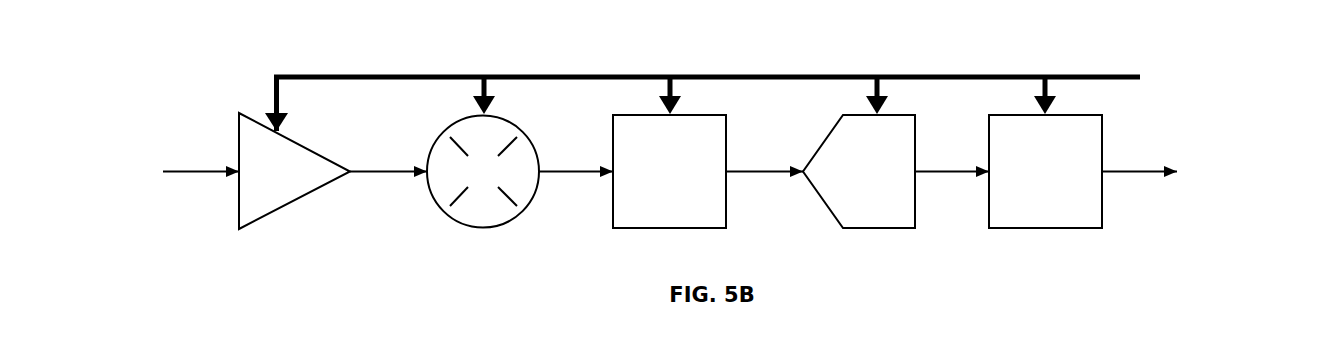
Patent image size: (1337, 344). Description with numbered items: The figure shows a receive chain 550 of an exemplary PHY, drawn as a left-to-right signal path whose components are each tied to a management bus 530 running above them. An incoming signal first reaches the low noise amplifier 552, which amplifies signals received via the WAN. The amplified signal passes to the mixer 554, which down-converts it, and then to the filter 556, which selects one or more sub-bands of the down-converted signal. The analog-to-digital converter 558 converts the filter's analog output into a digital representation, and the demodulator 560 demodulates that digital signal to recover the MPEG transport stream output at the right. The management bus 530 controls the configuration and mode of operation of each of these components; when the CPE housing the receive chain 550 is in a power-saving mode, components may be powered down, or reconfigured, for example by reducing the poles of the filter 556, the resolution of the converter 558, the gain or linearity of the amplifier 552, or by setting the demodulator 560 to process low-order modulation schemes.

The receive chain 550 is at (200, 120).
The management bus 530 is at (802, 75).
The low noise amplifier (LNA) module 552 is at (260, 181).
The mixer module 554 is at (466, 181).
The filter module 556 is at (653, 191).
The analog-to-digital converter (ADC) 558 is at (840, 192).
The demodulator 560 is at (1028, 192).